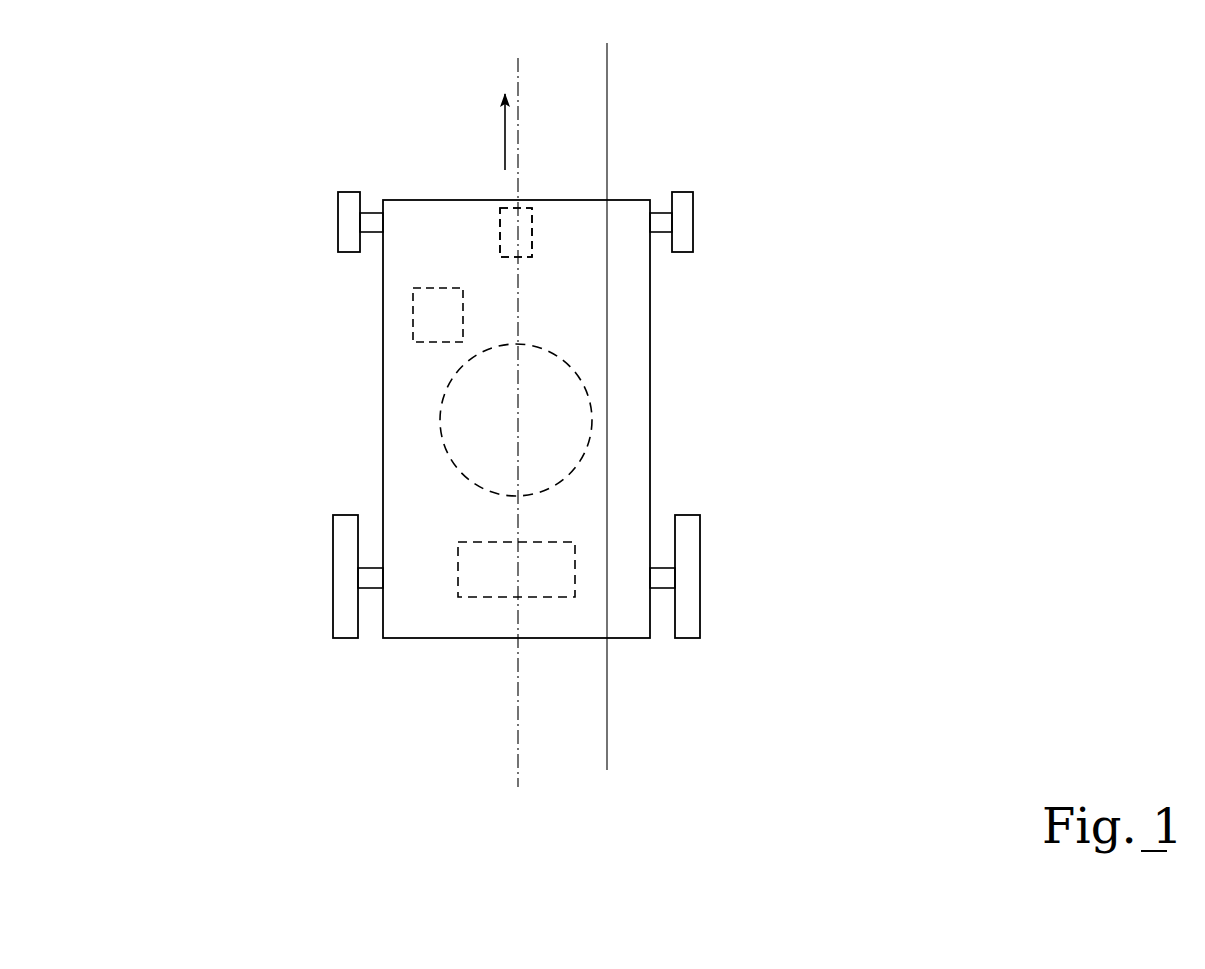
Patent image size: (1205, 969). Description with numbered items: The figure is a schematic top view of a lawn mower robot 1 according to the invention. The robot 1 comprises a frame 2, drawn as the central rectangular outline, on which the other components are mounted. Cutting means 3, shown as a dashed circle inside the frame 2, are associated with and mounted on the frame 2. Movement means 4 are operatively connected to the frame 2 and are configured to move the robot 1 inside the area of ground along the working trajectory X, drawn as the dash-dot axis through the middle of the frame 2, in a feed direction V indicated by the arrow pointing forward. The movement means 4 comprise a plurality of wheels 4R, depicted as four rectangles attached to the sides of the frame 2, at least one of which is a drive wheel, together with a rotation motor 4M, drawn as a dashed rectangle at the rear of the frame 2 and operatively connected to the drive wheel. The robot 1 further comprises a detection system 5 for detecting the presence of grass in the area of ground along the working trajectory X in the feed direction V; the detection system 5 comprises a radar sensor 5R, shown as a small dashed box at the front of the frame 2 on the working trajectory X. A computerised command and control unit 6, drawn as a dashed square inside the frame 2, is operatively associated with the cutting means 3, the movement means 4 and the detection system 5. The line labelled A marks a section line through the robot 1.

The lawn mower robot 1 is at (934, 307).
The frame 2 is at (655, 383).
The cutting means 3 is at (448, 435).
The movement means 4 is at (331, 568).
The wheels 4R is at (336, 218).
The rotation motor 4M is at (478, 598).
The detection system 5 is at (534, 248).
The radar sensor 5R is at (516, 232).
The computerised command and control unit 6 is at (411, 332).
The section line A is at (609, 58).
The working trajectory X is at (514, 70).
The feed direction V is at (503, 150).